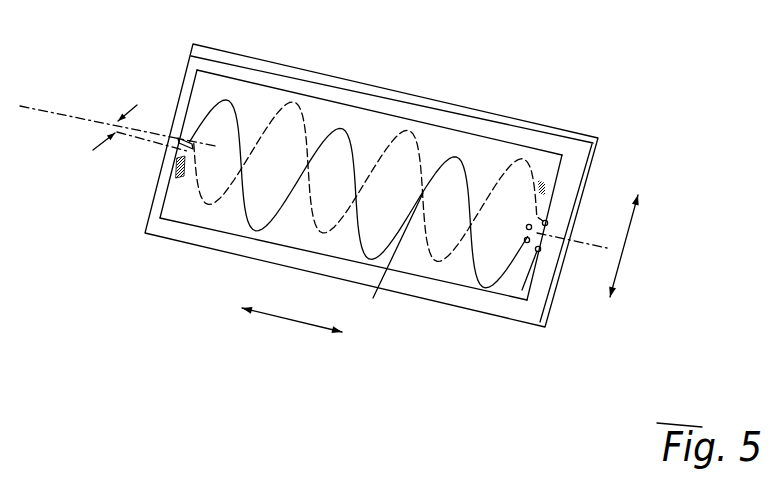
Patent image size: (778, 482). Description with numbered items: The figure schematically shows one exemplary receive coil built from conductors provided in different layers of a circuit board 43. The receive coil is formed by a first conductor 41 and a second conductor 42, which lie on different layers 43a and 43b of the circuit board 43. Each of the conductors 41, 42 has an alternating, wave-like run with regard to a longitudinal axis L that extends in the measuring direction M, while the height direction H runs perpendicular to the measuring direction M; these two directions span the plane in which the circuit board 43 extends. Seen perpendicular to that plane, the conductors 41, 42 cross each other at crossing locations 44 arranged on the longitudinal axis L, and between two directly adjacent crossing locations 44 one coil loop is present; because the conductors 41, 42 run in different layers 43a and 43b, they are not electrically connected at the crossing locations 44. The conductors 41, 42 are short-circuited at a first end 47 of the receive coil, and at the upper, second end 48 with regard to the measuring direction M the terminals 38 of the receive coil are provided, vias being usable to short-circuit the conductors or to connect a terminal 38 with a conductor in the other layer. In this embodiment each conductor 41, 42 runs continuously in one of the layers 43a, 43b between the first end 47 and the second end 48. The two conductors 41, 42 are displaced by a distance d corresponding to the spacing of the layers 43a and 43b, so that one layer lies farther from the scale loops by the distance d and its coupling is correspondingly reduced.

The terminals 38 is at (529, 224).
The first conductor 41 is at (343, 127).
The second conductor 42 is at (408, 130).
The circuit board 43 is at (409, 225).
The first layer 43a is at (535, 314).
The second layer 43b is at (588, 120).
The crossing locations 44 is at (355, 200).
The first end 47 is at (183, 157).
The second end 48 is at (546, 220).
The longitudinal axis L is at (60, 107).
The distance d is at (120, 140).
The height direction H is at (625, 250).
The measuring direction M is at (292, 318).